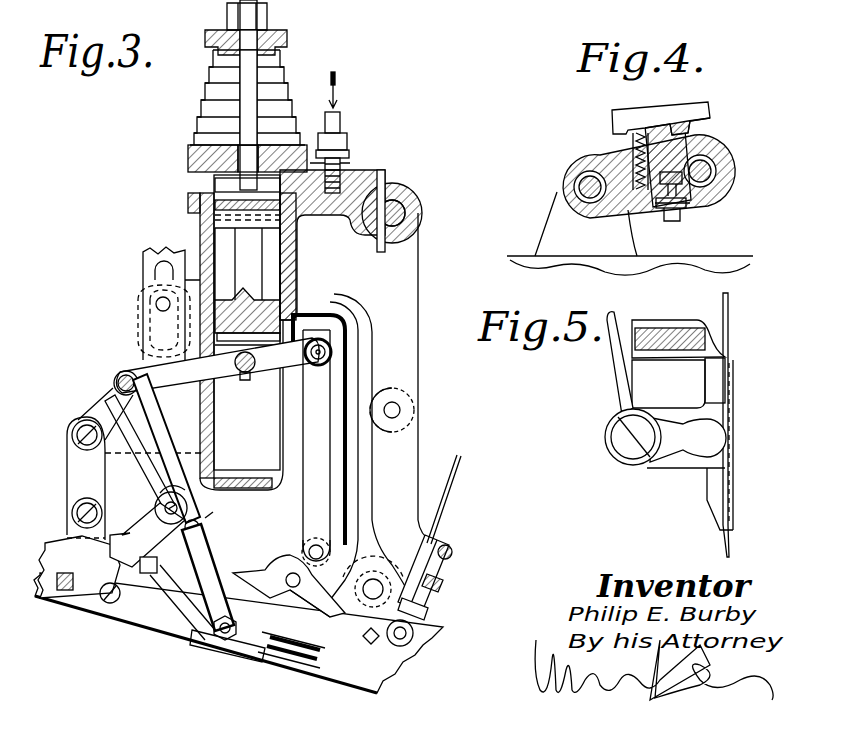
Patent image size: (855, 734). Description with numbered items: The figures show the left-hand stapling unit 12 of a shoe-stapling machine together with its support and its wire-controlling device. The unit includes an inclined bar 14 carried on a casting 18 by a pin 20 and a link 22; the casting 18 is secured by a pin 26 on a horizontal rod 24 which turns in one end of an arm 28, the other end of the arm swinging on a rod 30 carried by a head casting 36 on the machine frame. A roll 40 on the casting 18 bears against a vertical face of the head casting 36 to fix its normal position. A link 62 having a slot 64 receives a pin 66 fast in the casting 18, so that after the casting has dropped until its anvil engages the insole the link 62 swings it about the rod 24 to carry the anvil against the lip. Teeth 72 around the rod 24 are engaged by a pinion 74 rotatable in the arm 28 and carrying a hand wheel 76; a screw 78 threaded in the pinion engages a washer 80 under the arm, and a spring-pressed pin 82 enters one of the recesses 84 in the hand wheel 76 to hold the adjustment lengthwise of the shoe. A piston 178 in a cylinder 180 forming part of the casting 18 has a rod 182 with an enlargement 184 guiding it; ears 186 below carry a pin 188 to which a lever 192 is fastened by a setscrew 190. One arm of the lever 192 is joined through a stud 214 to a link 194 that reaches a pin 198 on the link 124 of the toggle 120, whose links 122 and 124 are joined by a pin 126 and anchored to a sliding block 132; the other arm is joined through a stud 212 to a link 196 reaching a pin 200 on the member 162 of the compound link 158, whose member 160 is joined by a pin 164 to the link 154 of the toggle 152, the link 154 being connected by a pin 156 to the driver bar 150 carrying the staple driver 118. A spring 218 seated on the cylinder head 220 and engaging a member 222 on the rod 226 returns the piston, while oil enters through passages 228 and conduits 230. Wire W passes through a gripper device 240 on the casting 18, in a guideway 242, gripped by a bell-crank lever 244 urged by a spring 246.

In FIG. 3, the stapling unit 12 is at (170, 641).
In FIG. 3, the bar 14 is at (60, 548).
In FIG. 3, the casting 18 is at (408, 268).
In FIG. 3, the pin 20 is at (366, 590).
In FIG. 3, the link 22 is at (80, 470).
In FIG. 3, the horizontal rod 24 is at (395, 207).
In FIG. 4, the horizontal rod 24 is at (713, 172).
In FIG. 3, the pin 26 is at (381, 170).
In FIG. 4, the arm 28 is at (650, 207).
In FIG. 4, the rod 30 is at (582, 184).
In FIG. 4, the head casting 36 is at (575, 268).
In FIG. 3, the roll 40 is at (415, 404).
In FIG. 3, the link 62 is at (157, 260).
In FIG. 3, the slot 64 is at (157, 266).
In FIG. 3, the pin 66 is at (157, 303).
In FIG. 4, the teeth 72 is at (677, 187).
In FIG. 4, the pinion 74 is at (667, 150).
In FIG. 4, the hand wheel 76 is at (700, 105).
In FIG. 4, the screw 78 is at (675, 222).
In FIG. 4, the washer 80 is at (686, 204).
In FIG. 4, the spring-pressed pin 82 is at (643, 133).
In FIG. 4, the recesses 84 is at (697, 132).
In FIG. 3, the staple driver 118 is at (297, 648).
In FIG. 3, the toggle 120 is at (285, 544).
In FIG. 3, the link 122 is at (303, 594).
In FIG. 3, the link 124 is at (243, 573).
In FIG. 3, the pin 126 is at (285, 582).
In FIG. 3, the block 132 is at (88, 592).
In FIG. 3, the driver bar 150 is at (250, 640).
In FIG. 3, the toggle 152 is at (212, 522).
In FIG. 3, the link 154 is at (213, 583).
In FIG. 3, the pin 156 is at (223, 642).
In FIG. 3, the compound link 158 is at (136, 515).
In FIG. 3, the member 160 is at (180, 543).
In FIG. 3, the member 162 is at (165, 492).
In FIG. 3, the pin 164 is at (200, 532).
In FIG. 3, the piston 178 is at (270, 217).
In FIG. 3, the cylinder 180 is at (290, 252).
In FIG. 3, the rod 182 is at (248, 277).
In FIG. 3, the enlargement 184 is at (220, 345).
In FIG. 3, the ears 186 is at (200, 353).
In FIG. 3, the pin 188 is at (283, 340).
In FIG. 3, the setscrew 190 is at (250, 382).
In FIG. 3, the lever 192 is at (160, 388).
In FIG. 3, the link 194 is at (323, 388).
In FIG. 3, the link 196 is at (160, 478).
In FIG. 3, the pin 198 is at (322, 548).
In FIG. 3, the pin 200 is at (179, 507).
In FIG. 3, the stud 212 is at (115, 381).
In FIG. 3, the stud 214 is at (330, 343).
In FIG. 3, the spring 218 is at (196, 102).
In FIG. 3, the head 220 is at (190, 158).
In FIG. 3, the member 222 is at (270, 40).
In FIG. 3, the rod 226 is at (248, 82).
In FIG. 3, the passages 228 is at (337, 163).
In FIG. 3, the conduits 230 is at (334, 122).
In FIG. 3, the gripper device 240 is at (460, 563).
In FIG. 5, the gripper device 240 is at (680, 479).
In FIG. 5, the guideway 242 is at (727, 385).
In FIG. 5, the bell-crank lever 244 is at (710, 442).
In FIG. 5, the spring 246 is at (623, 330).
In FIG. 3, the wire W is at (450, 493).
In FIG. 5, the wire W is at (730, 317).